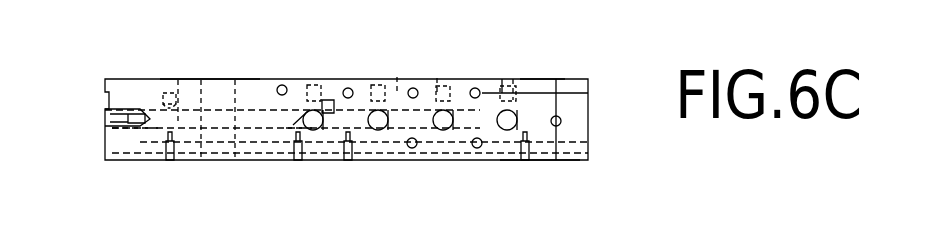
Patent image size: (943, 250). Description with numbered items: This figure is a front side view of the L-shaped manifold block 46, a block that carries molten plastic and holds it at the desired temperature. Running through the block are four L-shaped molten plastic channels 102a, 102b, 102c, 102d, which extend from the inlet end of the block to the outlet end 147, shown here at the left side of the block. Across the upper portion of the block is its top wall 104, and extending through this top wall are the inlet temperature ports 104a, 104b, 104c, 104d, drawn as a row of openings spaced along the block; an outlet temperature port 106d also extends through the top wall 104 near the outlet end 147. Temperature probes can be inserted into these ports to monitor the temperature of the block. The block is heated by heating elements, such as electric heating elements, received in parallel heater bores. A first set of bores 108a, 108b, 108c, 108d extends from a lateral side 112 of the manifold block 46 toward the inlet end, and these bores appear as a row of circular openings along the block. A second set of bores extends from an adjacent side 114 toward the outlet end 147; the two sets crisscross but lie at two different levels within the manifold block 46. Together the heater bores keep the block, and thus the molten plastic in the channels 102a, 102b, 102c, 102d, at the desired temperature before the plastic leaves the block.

The manifold block 46 is at (538, 165).
The molten plastic channel 102a is at (286, 135).
The molten plastic channel 102b is at (398, 78).
The molten plastic channel 102c is at (438, 78).
The molten plastic channel 102d is at (156, 136).
The top wall 104 is at (188, 78).
The inlet temperature port 104a is at (320, 84).
The inlet temperature port 104b is at (384, 82).
The inlet temperature port 104c is at (447, 90).
The inlet temperature port 104d is at (513, 95).
The outlet temperature port 106d is at (162, 124).
The heater bore 108a is at (280, 86).
The heater bore 108b is at (350, 88).
The heater bore 108c is at (413, 88).
The heater bore 108d is at (477, 91).
The lateral side 112 is at (543, 39).
The adjacent side 114 is at (588, 118).
The outlet end 147 is at (103, 98).